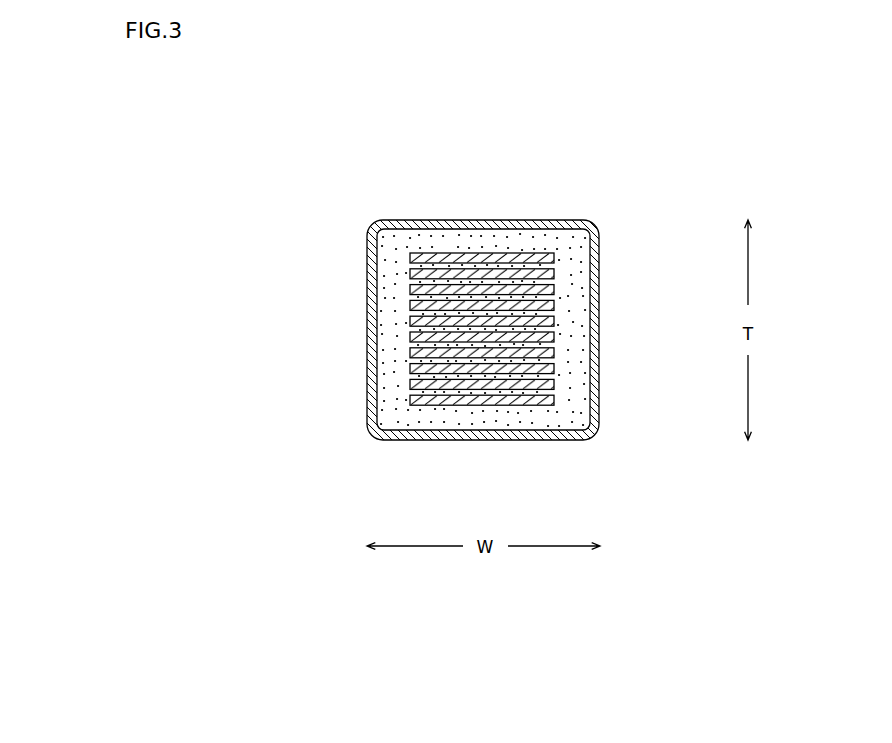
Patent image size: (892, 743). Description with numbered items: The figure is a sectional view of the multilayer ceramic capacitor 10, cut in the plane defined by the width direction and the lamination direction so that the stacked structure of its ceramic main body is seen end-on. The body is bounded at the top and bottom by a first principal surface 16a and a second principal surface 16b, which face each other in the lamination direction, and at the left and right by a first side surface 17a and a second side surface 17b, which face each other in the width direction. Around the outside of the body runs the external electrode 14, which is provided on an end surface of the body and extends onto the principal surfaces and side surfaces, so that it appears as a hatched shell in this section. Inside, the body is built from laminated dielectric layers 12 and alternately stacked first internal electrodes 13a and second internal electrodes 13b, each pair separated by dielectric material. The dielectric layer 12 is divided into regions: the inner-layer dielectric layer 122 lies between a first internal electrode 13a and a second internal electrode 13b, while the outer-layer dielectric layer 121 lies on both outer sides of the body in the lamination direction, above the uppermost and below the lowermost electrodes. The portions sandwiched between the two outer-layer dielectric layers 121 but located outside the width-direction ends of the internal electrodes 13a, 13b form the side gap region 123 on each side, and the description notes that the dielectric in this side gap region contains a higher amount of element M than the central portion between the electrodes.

The multilayer ceramic capacitor 10 is at (448, 295).
The dielectric layer 12 is at (448, 295).
The outer-layer dielectric layer 121 is at (477, 242).
The inner-layer dielectric layer 122 is at (448, 268).
The side gap region 123 is at (393, 275).
The first internal electrode 13a is at (541, 290).
The second internal electrode 13b is at (546, 378).
The external electrode 14 is at (368, 355).
The first principal surface 16a is at (408, 214).
The second principal surface 16b is at (480, 446).
The first side surface 17a is at (361, 286).
The second side surface 17b is at (607, 292).